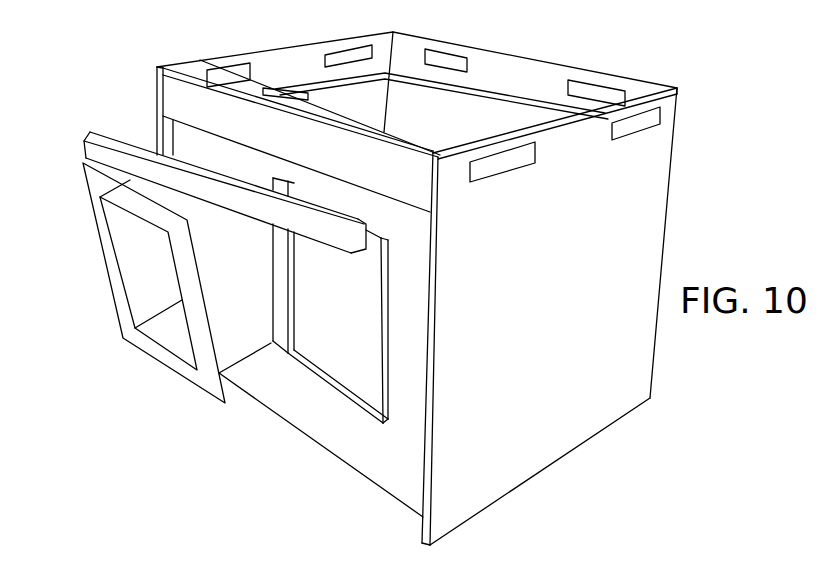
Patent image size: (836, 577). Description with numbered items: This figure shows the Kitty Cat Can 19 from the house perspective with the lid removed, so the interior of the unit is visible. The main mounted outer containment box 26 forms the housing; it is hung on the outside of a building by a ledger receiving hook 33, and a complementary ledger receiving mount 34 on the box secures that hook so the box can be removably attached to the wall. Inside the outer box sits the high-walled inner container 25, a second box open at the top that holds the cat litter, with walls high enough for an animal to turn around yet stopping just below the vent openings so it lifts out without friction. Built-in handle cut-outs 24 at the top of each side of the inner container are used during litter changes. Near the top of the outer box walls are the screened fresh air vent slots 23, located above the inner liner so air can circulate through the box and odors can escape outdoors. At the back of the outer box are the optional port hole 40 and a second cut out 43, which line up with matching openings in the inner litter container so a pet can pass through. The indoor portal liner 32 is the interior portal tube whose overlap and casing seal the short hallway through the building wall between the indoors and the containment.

The Kitty Cat Can 19 is at (692, 151).
The screened fresh air vent slots 23 is at (452, 52).
The handle cut-outs 24 is at (298, 95).
The high-walled inner container 25 is at (517, 90).
The main mounted outer containment box 26 is at (672, 193).
The indoor portal liner 32 is at (107, 268).
The ledger receiving hook 33 is at (82, 142).
The ledger receiving mount 34 is at (157, 107).
The port hole 40 is at (343, 392).
The main outer box cut out 43 is at (267, 347).